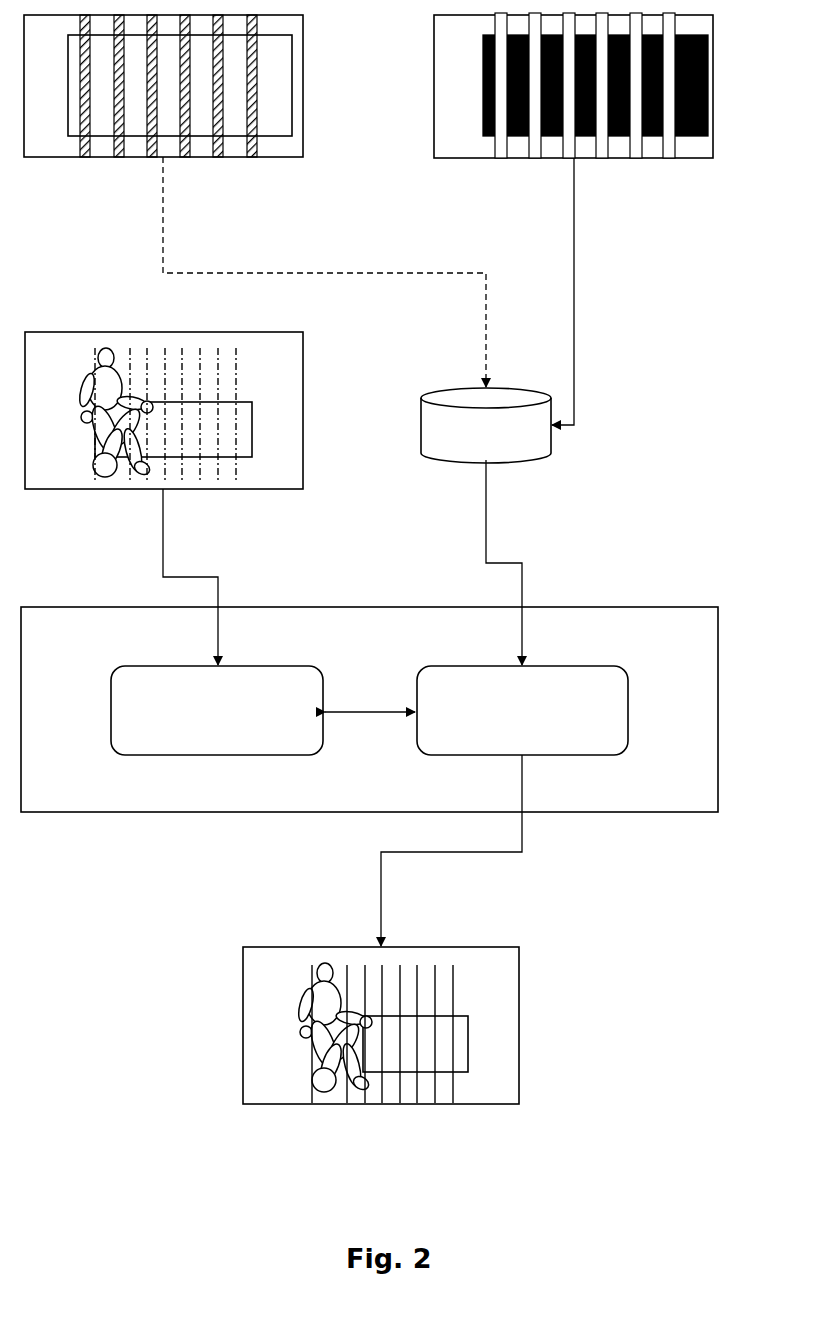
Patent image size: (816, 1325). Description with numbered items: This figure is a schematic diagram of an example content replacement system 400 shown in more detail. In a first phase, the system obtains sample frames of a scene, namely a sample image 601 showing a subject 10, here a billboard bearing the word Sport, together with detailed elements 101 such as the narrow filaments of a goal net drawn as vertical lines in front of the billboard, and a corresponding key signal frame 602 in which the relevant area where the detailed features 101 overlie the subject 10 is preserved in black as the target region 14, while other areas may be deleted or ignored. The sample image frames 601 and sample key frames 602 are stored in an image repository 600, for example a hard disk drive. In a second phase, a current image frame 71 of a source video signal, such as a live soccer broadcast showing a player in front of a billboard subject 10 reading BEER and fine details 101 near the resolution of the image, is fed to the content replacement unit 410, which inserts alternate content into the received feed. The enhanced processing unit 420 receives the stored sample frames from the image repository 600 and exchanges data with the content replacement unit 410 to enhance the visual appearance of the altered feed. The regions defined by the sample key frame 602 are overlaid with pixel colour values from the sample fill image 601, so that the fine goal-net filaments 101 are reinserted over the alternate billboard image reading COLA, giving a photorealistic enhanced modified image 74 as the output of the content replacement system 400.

The subject 10 is at (292, 90).
The detailed element 101 is at (187, 157).
The target region 14 is at (707, 85).
The sample image 601 is at (283, 157).
The key signal frame 602 is at (705, 158).
The current image frame 71 is at (290, 487).
The enhanced modified image 74 is at (518, 1095).
The image repository 600 is at (550, 452).
The content replacement system 400 is at (712, 705).
The content replacement unit 410 is at (313, 740).
The enhanced processing unit 420 is at (618, 740).